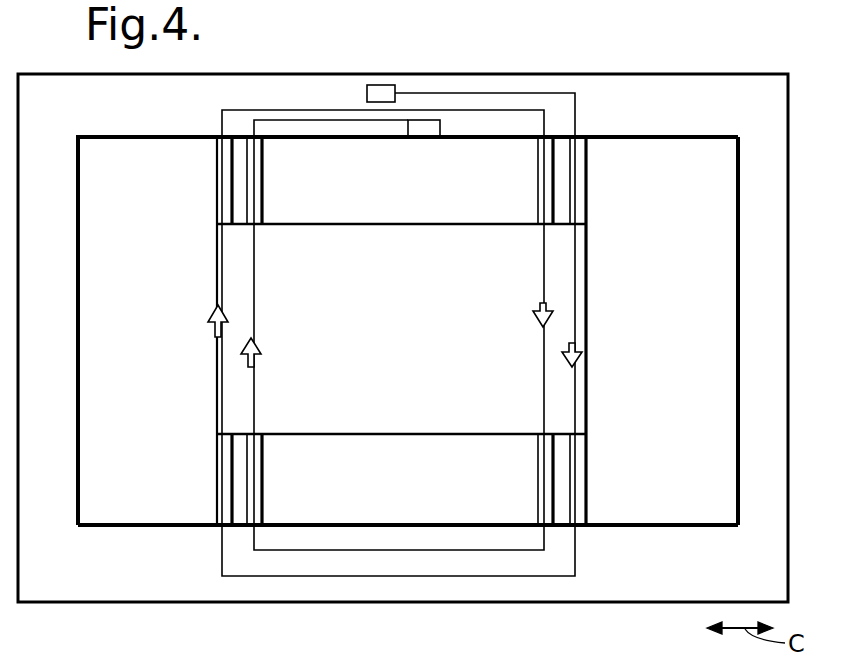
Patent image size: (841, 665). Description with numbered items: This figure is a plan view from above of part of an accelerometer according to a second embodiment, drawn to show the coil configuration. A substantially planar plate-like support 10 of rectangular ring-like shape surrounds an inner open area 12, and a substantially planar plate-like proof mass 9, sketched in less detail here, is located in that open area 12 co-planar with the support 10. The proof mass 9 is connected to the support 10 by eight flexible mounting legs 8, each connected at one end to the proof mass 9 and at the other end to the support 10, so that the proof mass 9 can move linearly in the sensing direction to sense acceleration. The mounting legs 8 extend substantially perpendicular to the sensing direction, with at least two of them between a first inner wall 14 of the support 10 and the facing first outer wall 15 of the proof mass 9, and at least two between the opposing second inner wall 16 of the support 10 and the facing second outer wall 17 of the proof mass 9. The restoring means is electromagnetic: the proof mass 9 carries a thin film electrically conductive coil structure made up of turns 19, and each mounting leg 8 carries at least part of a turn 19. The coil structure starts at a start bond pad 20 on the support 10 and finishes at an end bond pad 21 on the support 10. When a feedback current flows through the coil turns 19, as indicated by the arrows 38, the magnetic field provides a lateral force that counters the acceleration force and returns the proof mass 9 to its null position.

The mounting legs 8 is at (216, 180).
The proof mass 9 is at (422, 350).
The support 10 is at (787, 381).
The inner open area 12 is at (723, 235).
The first inner wall 14 is at (690, 138).
The first outer wall 15 is at (405, 222).
The second inner wall 16 is at (126, 526).
The second outer wall 17 is at (399, 436).
The coil structure turns 19 is at (283, 108).
The start bond pad 20 is at (378, 84).
The end bond pad 21 is at (434, 130).
The arrows 38 is at (216, 312).